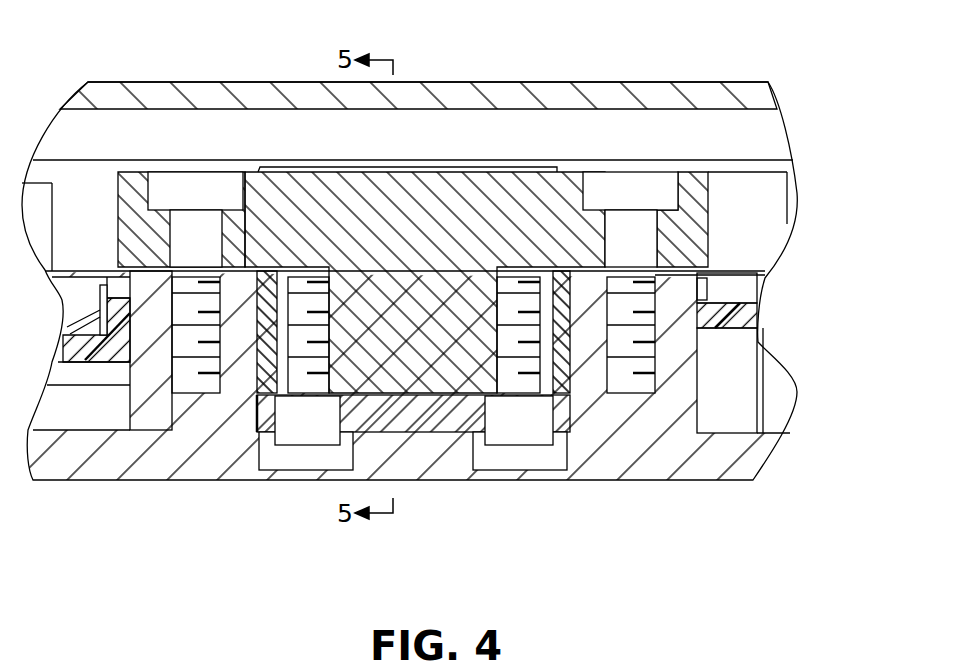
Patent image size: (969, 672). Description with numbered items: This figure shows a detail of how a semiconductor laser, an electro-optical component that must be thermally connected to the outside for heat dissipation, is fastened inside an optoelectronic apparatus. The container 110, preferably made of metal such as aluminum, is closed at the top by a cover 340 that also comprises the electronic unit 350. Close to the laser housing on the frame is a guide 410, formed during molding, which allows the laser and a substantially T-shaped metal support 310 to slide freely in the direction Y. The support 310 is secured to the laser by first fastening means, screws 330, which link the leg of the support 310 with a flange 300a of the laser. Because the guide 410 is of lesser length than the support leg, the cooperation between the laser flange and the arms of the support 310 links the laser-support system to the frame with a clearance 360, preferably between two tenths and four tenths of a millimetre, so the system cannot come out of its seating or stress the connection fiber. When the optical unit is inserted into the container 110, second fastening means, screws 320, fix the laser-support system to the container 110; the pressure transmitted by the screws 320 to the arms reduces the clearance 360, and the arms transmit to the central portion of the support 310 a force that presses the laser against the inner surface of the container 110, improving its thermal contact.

The container 110 is at (624, 455).
The flange 300a is at (460, 420).
The T-shaped metal support 310 is at (538, 190).
The screws 320 is at (628, 185).
The screws 330 is at (282, 458).
The cover 340 is at (737, 92).
The electronic unit 350 is at (772, 145).
The clearance 360 is at (657, 273).
The guide 410 is at (258, 398).